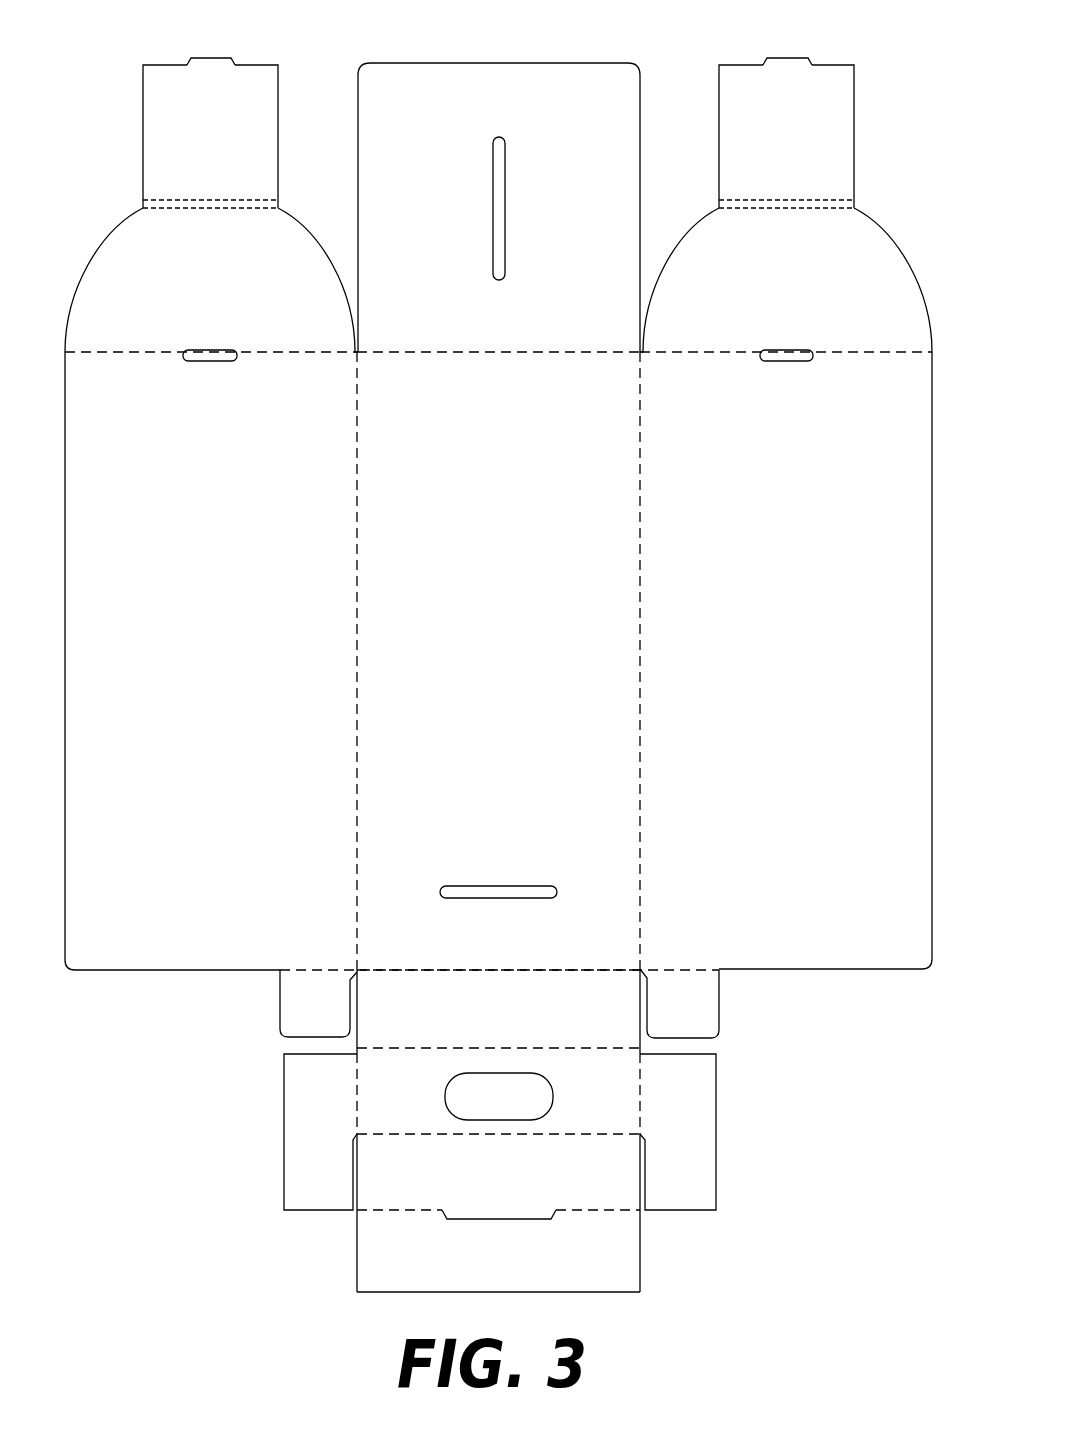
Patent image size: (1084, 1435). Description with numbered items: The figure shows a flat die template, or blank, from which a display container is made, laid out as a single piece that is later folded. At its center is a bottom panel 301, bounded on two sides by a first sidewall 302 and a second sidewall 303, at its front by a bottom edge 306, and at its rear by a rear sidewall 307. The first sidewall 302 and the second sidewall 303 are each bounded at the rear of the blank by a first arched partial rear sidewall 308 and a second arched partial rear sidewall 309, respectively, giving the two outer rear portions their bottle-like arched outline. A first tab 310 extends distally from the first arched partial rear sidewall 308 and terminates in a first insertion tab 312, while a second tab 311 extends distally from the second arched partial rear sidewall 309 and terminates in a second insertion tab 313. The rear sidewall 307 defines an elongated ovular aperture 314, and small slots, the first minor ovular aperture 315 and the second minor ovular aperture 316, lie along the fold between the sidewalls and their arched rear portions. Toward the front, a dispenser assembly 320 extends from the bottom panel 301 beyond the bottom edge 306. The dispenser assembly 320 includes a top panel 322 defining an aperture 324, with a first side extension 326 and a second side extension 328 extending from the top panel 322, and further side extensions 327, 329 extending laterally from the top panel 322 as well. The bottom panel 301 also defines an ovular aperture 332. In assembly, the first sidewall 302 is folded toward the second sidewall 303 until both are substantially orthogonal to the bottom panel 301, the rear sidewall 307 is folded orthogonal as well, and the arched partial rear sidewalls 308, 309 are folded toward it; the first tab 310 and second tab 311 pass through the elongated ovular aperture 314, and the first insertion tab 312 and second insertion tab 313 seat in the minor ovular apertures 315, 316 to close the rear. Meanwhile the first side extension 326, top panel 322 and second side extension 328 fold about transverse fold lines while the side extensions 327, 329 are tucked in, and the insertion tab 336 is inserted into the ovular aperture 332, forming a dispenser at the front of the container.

The bottom panel 301 is at (510, 610).
The first sidewall 302 is at (213, 698).
The second sidewall 303 is at (778, 689).
The bottom edge 306 is at (460, 970).
The rear sidewall 307 is at (543, 87).
The first arched partial rear sidewall 308 is at (130, 293).
The second arched partial rear sidewall 309 is at (873, 280).
The first tab 310 is at (173, 145).
The second tab 311 is at (830, 132).
The first insertion tab 312 is at (211, 65).
The second insertion tab 313 is at (778, 60).
The elongated ovular aperture 314 is at (505, 207).
The first minor ovular aperture 315 is at (213, 363).
The second minor ovular aperture 316 is at (787, 365).
The dispenser assembly 320 is at (905, 1153).
The top panel 322 is at (610, 1078).
The aperture 324 is at (445, 1097).
The first side extension 326 is at (510, 1007).
The side extension 327 is at (310, 1103).
The second side extension 328 is at (603, 1180).
The side extension 329 is at (695, 1093).
The ovular aperture 332 is at (500, 885).
The insertion tab 336 is at (518, 1223).